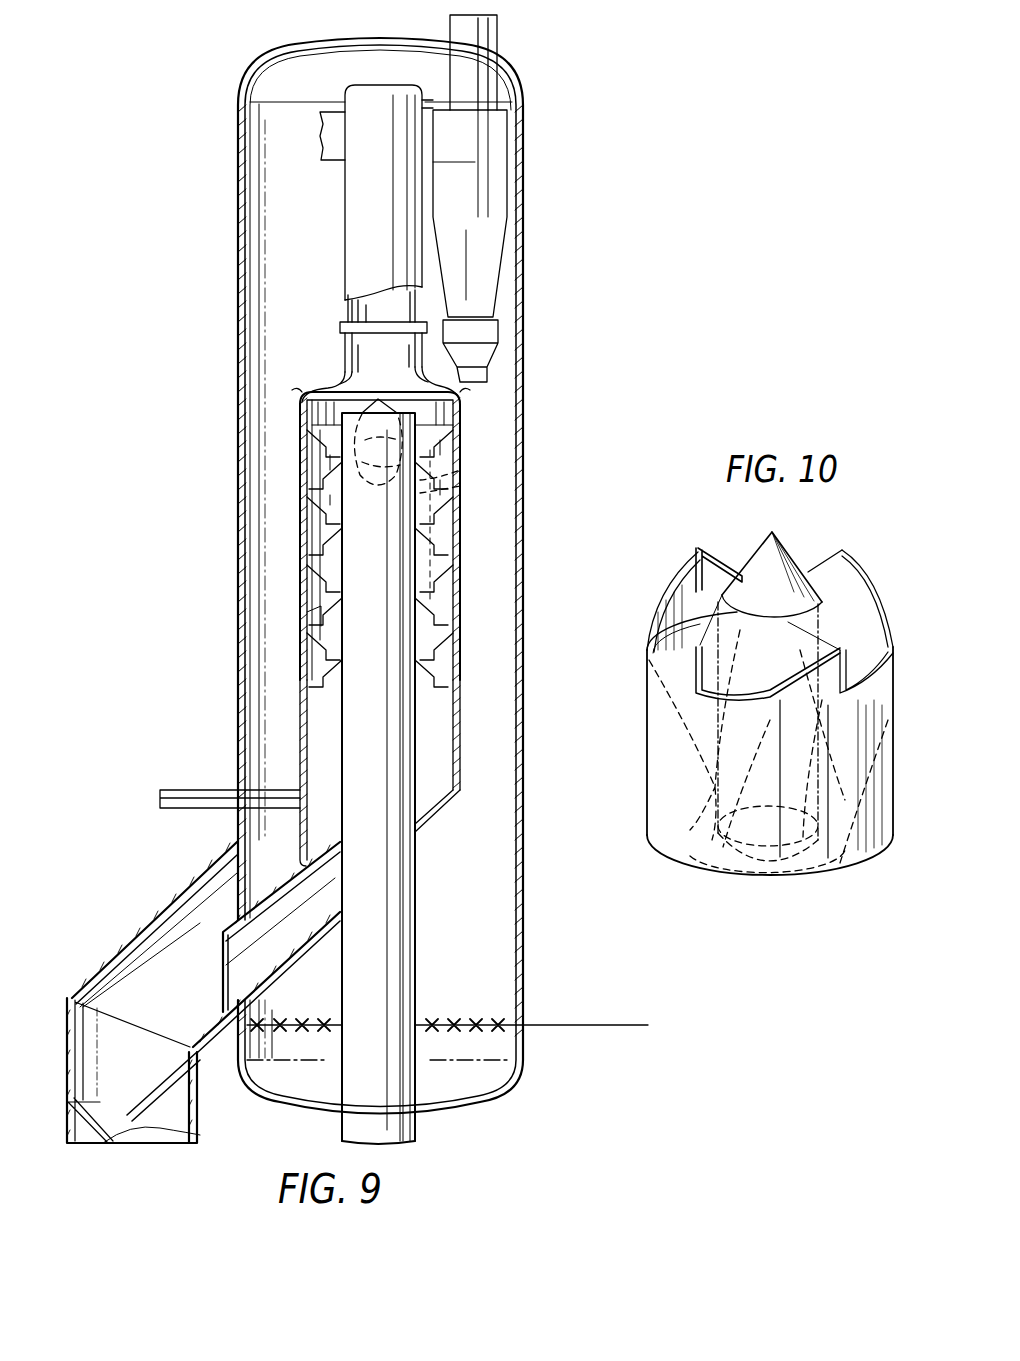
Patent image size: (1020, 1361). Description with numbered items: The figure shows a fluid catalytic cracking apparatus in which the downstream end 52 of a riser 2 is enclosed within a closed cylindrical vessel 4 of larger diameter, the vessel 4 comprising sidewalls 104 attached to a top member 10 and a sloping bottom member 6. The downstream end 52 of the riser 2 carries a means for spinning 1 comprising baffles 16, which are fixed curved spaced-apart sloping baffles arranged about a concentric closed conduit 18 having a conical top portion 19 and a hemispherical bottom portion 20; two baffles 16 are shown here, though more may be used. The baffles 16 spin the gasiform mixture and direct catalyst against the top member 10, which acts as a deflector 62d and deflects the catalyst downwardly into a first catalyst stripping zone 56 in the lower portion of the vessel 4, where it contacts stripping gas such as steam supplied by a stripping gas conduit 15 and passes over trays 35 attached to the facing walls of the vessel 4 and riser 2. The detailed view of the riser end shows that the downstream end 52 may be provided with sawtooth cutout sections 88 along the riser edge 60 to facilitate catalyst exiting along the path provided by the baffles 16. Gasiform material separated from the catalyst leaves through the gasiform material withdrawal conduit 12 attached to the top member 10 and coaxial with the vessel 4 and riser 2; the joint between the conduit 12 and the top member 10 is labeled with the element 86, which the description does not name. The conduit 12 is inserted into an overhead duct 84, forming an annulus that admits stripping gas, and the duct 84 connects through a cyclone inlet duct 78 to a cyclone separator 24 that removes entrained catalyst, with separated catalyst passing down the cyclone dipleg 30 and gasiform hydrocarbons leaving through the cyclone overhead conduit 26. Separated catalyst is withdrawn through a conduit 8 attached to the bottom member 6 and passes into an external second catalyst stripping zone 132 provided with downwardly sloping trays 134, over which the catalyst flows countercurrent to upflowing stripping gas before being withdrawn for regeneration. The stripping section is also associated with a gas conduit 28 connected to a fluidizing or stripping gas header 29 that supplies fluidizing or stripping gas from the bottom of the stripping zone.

In FIG. 9, the means for spinning 1 is at (452, 470).
In FIG. 10, the means for spinning 1 is at (713, 787).
In FIG. 9, the riser 2 is at (352, 730).
In FIG. 10, the riser 2 is at (647, 683).
In FIG. 9, the cylindrical vessel 4 is at (460, 562).
In FIG. 9, the sloping bottom member 6 is at (430, 818).
In FIG. 9, the conduit for withdrawing particles of separated catalyst 8 is at (230, 928).
In FIG. 9, the top member 10 is at (340, 378).
In FIG. 9, the gasiform material withdrawal conduit 12 is at (355, 342).
In FIG. 9, the stripping gas conduit 15 is at (166, 788).
In FIG. 9, the baffles 16 is at (456, 446).
In FIG. 10, the baffles 16 is at (880, 792).
In FIG. 9, the closed conduit 18 is at (320, 480).
In FIG. 10, the closed conduit 18 is at (727, 683).
In FIG. 9, the conical top portion 19 is at (392, 400).
In FIG. 10, the conical top portion 19 is at (756, 566).
In FIG. 9, the hemispherical bottom portion 20 is at (458, 490).
In FIG. 10, the hemispherical bottom portion 20 is at (752, 880).
In FIG. 9, the cyclone separator 24 is at (503, 190).
In FIG. 9, the cyclone overhead conduit 26 is at (494, 34).
In FIG. 9, the gas conduit 28 is at (565, 1023).
In FIG. 9, the fluidizing or stripping gas header 29 is at (450, 1022).
In FIG. 9, the cyclone dipleg 30 is at (495, 366).
In FIG. 9, the trays 35 is at (312, 617).
In FIG. 9, the downstream end of the riser 52 is at (312, 448).
In FIG. 10, the downstream end of the riser 52 is at (644, 726).
In FIG. 9, the first catalyst stripping zone 56 is at (445, 538).
In FIG. 10, the riser edge 60 is at (690, 590).
In FIG. 9, the deflector 62d is at (304, 393).
In FIG. 9, the cyclone inlet duct 78 is at (437, 120).
In FIG. 9, the overhead duct 84 is at (353, 208).
In FIG. 9, the flange 86 is at (345, 368).
In FIG. 10, the cutout sections 88 is at (654, 620).
In FIG. 9, the sidewalls 104 is at (462, 628).
In FIG. 9, the external second catalyst stripping zone 132 is at (66, 1000).
In FIG. 9, the downwardly sloping trays 134 is at (165, 1087).